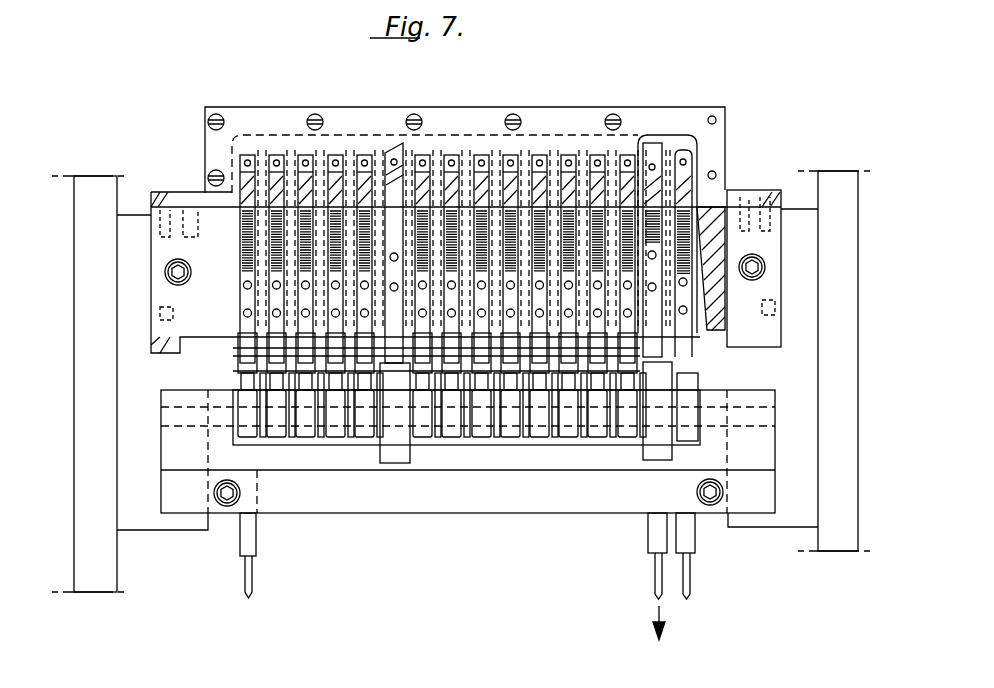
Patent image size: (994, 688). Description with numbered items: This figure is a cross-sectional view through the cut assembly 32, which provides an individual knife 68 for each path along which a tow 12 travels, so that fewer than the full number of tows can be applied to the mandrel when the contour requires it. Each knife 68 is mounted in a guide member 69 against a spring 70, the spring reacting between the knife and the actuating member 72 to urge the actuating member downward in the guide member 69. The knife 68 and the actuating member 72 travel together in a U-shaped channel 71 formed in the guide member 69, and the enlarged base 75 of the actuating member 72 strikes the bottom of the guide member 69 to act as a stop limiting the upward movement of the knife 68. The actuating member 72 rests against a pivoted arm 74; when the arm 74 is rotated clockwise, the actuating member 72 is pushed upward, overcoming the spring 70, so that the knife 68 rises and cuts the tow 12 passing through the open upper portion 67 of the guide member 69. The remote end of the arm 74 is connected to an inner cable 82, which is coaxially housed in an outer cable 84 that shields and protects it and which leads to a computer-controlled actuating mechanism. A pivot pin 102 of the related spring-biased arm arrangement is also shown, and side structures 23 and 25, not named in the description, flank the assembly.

The tow 12 is at (626, 152).
The left side bar 23 is at (75, 385).
The right side bar 25 is at (858, 368).
The cut assembly 32 is at (732, 89).
The open upper portion 67 is at (680, 135).
The knife 68 is at (690, 180).
The guide member 69 is at (686, 117).
The spring 70 is at (703, 220).
The U-shaped channel 71 is at (244, 297).
The actuating member 72 is at (691, 364).
The pivoted arm 74 is at (542, 432).
The enlarged base 75 is at (246, 384).
The inner cable 82 is at (252, 585).
The outer cable 84 is at (256, 546).
The pivot pin 102 is at (625, 509).